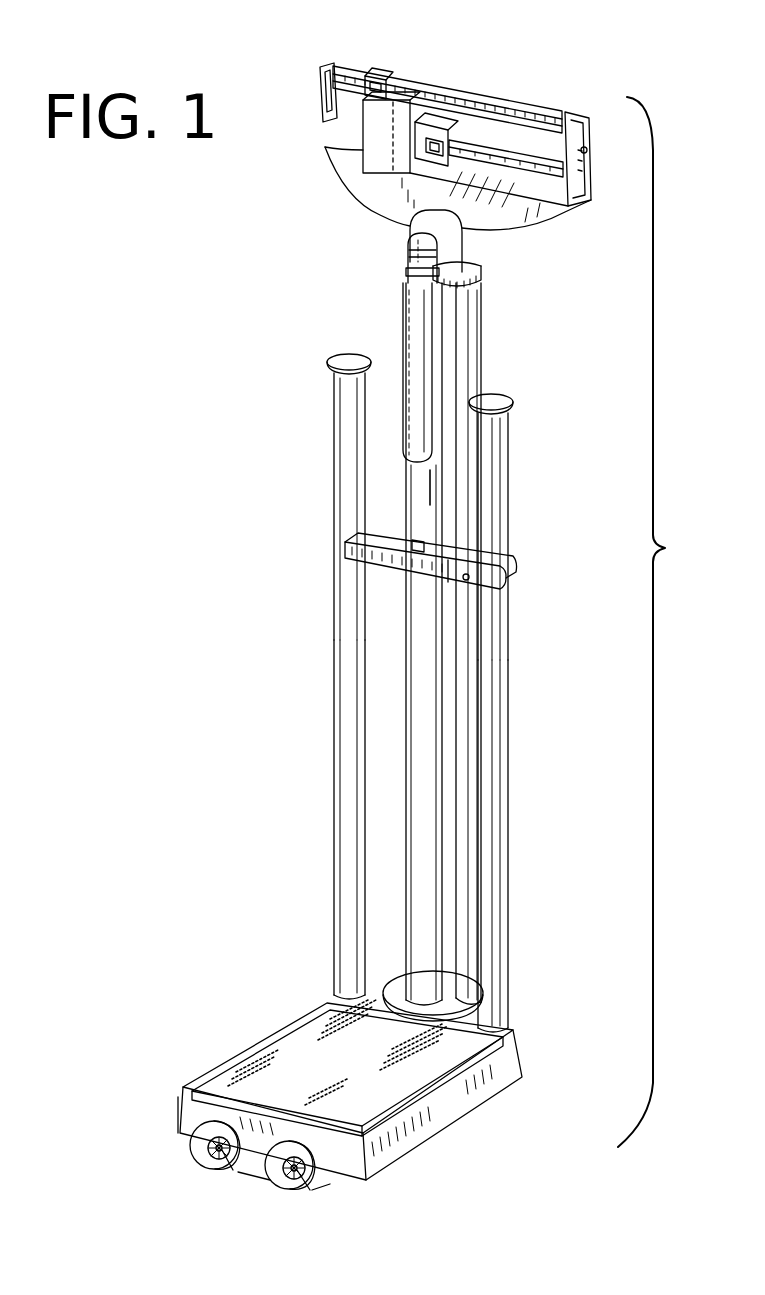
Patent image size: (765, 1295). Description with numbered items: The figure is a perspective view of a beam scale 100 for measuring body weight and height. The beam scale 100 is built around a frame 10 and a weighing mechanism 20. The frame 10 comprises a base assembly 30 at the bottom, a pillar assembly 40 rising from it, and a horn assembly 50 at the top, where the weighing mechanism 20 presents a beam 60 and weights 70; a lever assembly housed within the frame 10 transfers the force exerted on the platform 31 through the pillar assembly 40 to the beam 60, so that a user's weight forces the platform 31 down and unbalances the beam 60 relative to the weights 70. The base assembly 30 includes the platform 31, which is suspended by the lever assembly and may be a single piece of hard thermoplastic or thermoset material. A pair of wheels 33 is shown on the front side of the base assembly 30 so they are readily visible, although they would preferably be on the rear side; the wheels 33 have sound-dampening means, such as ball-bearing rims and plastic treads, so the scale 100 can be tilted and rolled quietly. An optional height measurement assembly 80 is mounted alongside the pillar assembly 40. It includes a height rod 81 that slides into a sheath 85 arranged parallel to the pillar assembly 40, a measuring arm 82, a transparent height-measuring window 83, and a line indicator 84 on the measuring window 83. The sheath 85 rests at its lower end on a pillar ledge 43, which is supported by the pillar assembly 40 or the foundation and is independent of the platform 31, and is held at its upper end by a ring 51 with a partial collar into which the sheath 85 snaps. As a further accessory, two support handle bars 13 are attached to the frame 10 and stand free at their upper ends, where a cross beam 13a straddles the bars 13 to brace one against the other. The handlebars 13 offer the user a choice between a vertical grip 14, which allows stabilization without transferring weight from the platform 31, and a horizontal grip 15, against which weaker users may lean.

The frame 10 is at (663, 622).
The weighing mechanism 20 is at (598, 92).
The beam 60 is at (348, 68).
The weights 70 is at (432, 126).
The horn assembly 50 is at (528, 235).
The height rod 81 is at (425, 236).
The line indicator 84 is at (410, 256).
The transparent height-measuring window 83 is at (410, 267).
The ring 51 is at (473, 284).
The measuring arm 82 is at (417, 357).
The height measurement assembly 80 is at (422, 627).
The sheath 85 is at (430, 488).
The pillar assembly 40 is at (452, 657).
The vertical grip 14 is at (343, 488).
The support handle bars 13 is at (345, 740).
The horizontal grip 15 is at (417, 550).
The cross beam 13a is at (373, 563).
The beam scale 100 is at (298, 560).
The pillar ledge 43 is at (450, 1003).
The platform 31 is at (255, 1060).
The base assembly 30 is at (510, 1060).
The wheels 33 is at (303, 1187).